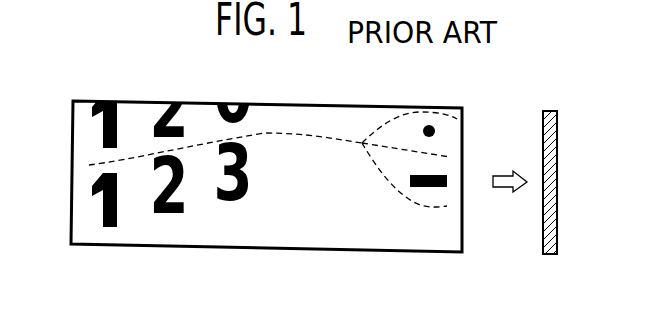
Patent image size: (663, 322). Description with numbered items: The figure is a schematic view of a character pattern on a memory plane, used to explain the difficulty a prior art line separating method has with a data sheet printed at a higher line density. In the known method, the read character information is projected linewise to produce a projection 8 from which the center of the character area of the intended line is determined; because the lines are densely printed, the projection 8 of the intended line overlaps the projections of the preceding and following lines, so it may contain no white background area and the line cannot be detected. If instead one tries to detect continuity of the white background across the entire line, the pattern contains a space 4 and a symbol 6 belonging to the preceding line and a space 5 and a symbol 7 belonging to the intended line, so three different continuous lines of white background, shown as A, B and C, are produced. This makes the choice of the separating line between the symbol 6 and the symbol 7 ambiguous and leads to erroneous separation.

The space 4 is at (302, 114).
The space 5 is at (307, 177).
The symbol 6 is at (426, 124).
The symbol 7 is at (418, 188).
The projection 8 is at (543, 127).
The continuous line of white background portion A is at (452, 121).
The continuous line of white background portion B is at (449, 157).
The continuous line of white background portion C is at (449, 204).